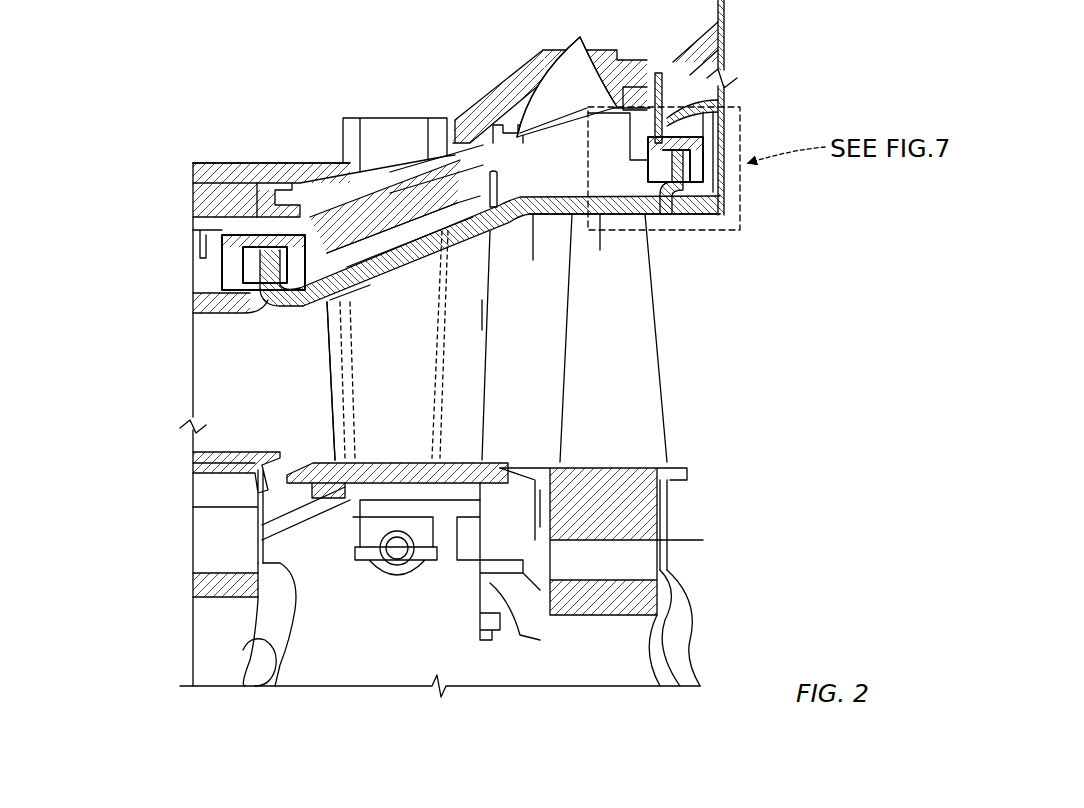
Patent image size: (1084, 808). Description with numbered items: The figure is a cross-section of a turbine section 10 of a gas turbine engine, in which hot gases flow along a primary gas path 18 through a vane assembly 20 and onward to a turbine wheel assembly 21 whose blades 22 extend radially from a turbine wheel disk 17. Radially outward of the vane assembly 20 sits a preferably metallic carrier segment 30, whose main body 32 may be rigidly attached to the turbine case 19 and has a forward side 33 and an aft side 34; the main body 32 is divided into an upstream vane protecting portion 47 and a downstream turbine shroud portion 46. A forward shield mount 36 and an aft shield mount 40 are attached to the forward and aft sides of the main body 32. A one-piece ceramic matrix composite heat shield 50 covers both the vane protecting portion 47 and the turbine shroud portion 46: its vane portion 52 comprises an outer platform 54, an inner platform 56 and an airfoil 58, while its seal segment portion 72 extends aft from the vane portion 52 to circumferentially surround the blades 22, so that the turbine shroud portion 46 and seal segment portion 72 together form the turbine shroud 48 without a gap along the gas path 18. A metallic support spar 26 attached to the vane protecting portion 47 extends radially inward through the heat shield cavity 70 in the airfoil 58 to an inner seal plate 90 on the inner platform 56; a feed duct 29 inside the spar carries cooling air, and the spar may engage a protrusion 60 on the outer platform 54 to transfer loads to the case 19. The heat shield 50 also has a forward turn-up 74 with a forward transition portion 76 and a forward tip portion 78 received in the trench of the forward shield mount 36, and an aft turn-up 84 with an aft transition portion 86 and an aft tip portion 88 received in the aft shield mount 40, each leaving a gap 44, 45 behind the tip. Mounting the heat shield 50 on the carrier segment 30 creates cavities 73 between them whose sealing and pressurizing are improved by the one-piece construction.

The turbine section 10 is at (160, 72).
The turbine wheel disk 17 is at (652, 510).
The primary gas path 18 is at (155, 400).
The turbine case 19 is at (252, 163).
The vane assembly 20 is at (358, 110).
The turbine wheel assembly 21 is at (629, 450).
The blades 22 is at (637, 322).
The support spar 26 is at (400, 460).
The feed duct 29 is at (404, 357).
The carrier segment 30 is at (490, 118).
The main body 32 is at (575, 100).
The forward side 33 is at (284, 195).
The aft side 34 is at (648, 93).
The forward shield mount 36 is at (232, 263).
The aft shield mount 40 is at (703, 157).
The gap 44 is at (313, 197).
The gap 45 is at (698, 182).
The turbine shroud portion 46 is at (582, 98).
The vane protecting portion 47 is at (455, 163).
The turbine shroud 48 is at (680, 230).
The heat shield 50 is at (533, 214).
The vane portion 52 is at (322, 382).
The outer platform 54 is at (447, 237).
The inner platform 56 is at (320, 480).
The airfoil 58 is at (473, 367).
The protrusion 60 is at (357, 272).
The heat shield cavity 70 is at (471, 318).
The seal segment portion 72 is at (620, 230).
The cavities 73 is at (625, 152).
The forward turn-up 74 is at (302, 312).
The forward transition portion 76 is at (277, 325).
The forward tip portion 78 is at (273, 263).
The aft turn-up 84 is at (690, 218).
The aft transition portion 86 is at (660, 187).
The aft tip portion 88 is at (703, 128).
The inner seal plate 90 is at (353, 507).